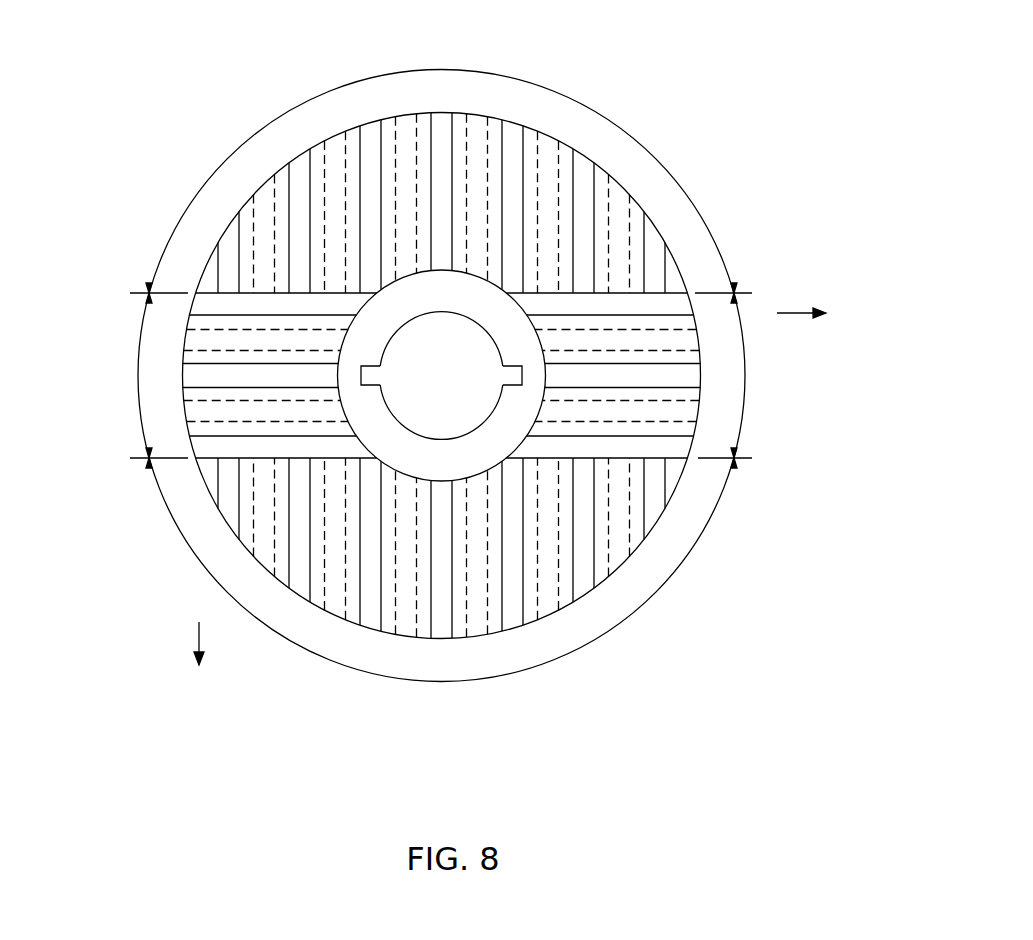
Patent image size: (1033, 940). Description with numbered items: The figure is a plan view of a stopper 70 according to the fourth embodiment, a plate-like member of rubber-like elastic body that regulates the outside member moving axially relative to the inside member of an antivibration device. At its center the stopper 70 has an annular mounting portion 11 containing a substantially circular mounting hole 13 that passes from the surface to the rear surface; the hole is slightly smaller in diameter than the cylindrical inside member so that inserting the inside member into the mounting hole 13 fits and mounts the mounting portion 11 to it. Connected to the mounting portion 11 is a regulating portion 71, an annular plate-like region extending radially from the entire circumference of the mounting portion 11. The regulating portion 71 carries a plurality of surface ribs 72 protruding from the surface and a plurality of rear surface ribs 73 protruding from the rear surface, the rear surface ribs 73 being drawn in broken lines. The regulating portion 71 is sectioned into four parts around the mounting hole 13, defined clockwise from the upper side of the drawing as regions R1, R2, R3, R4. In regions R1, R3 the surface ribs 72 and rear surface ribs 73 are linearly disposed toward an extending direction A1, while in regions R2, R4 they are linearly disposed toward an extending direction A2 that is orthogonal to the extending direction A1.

The stopper 70 is at (624, 110).
The regulating portion 71 is at (603, 585).
The surface rib 72 is at (372, 135).
The rear surface rib 73 is at (406, 128).
The mounting portion 11 is at (380, 321).
The mounting hole 13 is at (393, 413).
The region R1 is at (441, 70).
The region R2 is at (745, 375).
The region R3 is at (442, 682).
The region R4 is at (137, 373).
The extending direction A1 is at (199, 659).
The extending direction A2 is at (817, 315).